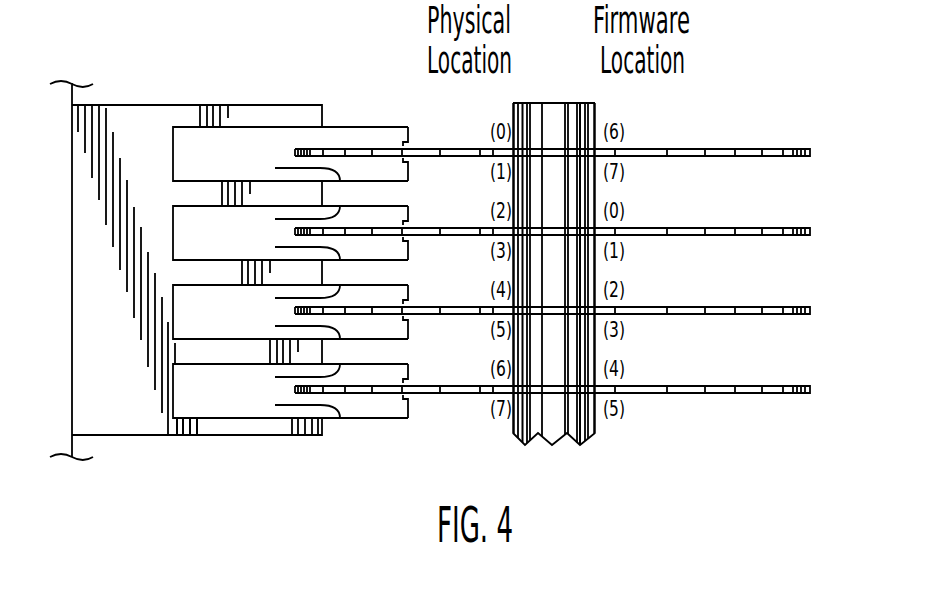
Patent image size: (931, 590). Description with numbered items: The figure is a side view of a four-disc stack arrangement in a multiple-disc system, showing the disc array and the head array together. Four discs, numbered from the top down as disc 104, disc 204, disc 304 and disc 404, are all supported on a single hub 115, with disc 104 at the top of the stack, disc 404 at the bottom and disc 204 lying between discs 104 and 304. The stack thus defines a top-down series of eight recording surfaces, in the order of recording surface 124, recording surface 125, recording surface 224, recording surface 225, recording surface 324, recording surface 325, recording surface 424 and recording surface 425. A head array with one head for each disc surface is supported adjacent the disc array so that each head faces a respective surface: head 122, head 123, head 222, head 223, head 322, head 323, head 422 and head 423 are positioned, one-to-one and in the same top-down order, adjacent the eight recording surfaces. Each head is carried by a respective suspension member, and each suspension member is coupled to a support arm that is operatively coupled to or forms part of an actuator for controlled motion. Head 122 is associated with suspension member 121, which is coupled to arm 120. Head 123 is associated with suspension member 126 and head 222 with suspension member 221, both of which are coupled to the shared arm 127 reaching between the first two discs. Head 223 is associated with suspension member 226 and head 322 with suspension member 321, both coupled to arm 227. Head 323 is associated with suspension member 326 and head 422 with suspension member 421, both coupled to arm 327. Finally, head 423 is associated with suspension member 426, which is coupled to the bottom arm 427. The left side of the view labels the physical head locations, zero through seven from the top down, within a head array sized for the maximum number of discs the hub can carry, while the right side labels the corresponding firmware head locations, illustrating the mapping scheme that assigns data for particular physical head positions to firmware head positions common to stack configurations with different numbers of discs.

The arm 120 is at (262, 104).
The suspension member 121 is at (342, 125).
The head 122 is at (412, 142).
The head 123 is at (410, 163).
The recording surface 124 is at (648, 149).
The recording surface 125 is at (718, 157).
The suspension member 126 is at (292, 168).
The arm 127 is at (203, 196).
The disc 104 is at (808, 149).
The hub 115 is at (540, 103).
The suspension member 221 is at (292, 219).
The head 222 is at (411, 221).
The head 223 is at (410, 242).
The recording surface 224 is at (648, 228).
The recording surface 225 is at (718, 236).
The suspension member 226 is at (292, 247).
The arm 227 is at (203, 275).
The disc 204 is at (808, 228).
The suspension member 321 is at (292, 298).
The head 322 is at (411, 300).
The head 323 is at (410, 321).
The recording surface 324 is at (648, 307).
The recording surface 325 is at (718, 315).
The suspension member 326 is at (292, 326).
The arm 327 is at (203, 354).
The disc 304 is at (808, 307).
The suspension member 421 is at (292, 377).
The head 422 is at (411, 379).
The head 423 is at (410, 400).
The recording surface 424 is at (648, 386).
The recording surface 425 is at (718, 394).
The suspension member 426 is at (292, 405).
The arm 427 is at (213, 428).
The disc 404 is at (808, 386).